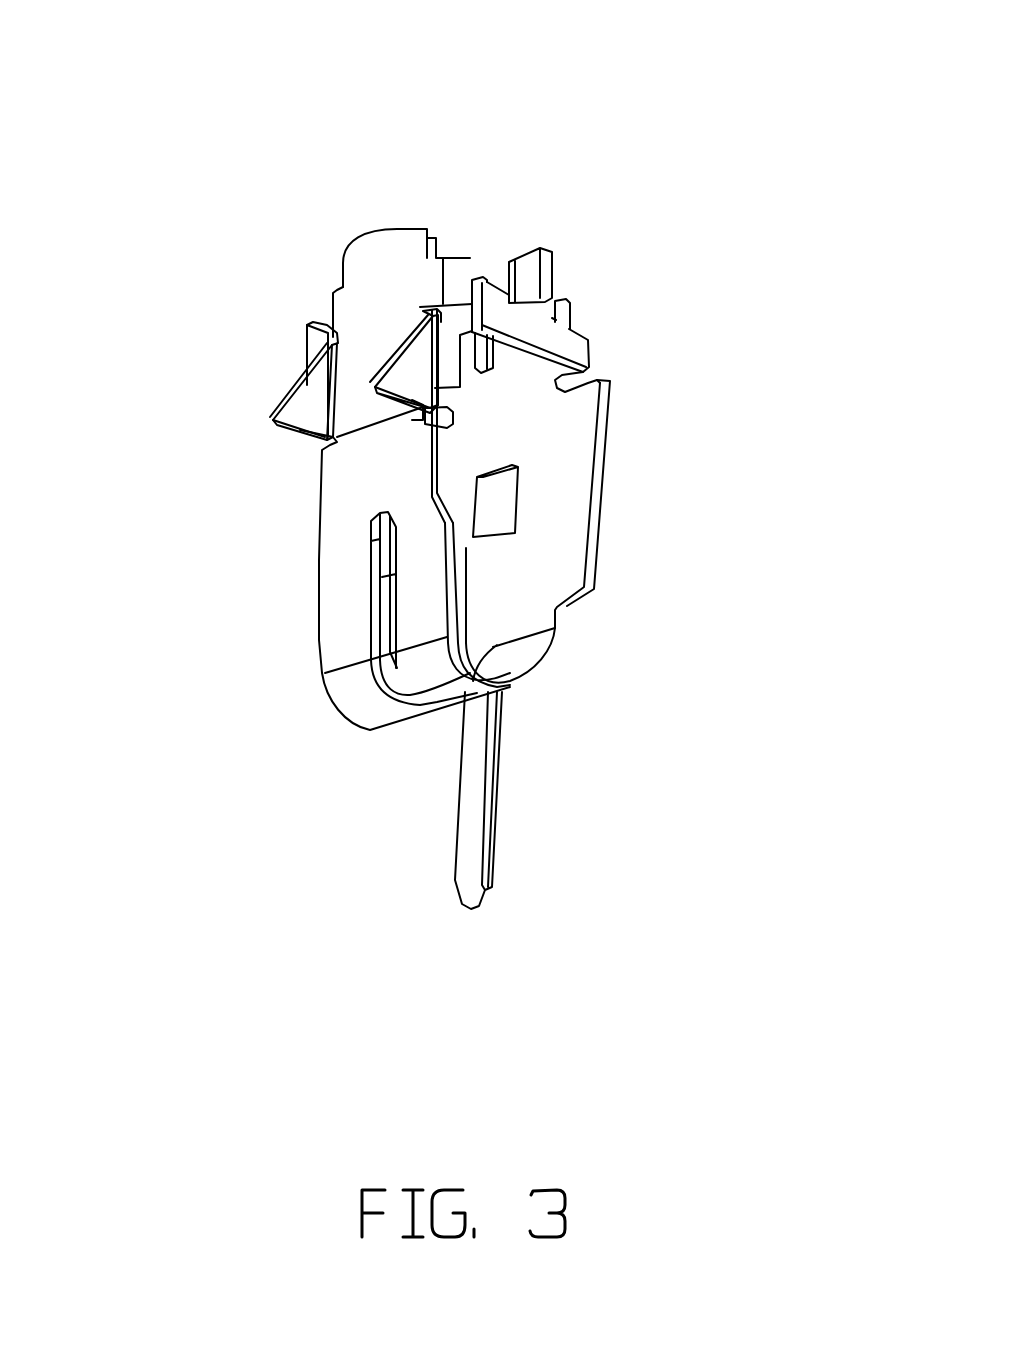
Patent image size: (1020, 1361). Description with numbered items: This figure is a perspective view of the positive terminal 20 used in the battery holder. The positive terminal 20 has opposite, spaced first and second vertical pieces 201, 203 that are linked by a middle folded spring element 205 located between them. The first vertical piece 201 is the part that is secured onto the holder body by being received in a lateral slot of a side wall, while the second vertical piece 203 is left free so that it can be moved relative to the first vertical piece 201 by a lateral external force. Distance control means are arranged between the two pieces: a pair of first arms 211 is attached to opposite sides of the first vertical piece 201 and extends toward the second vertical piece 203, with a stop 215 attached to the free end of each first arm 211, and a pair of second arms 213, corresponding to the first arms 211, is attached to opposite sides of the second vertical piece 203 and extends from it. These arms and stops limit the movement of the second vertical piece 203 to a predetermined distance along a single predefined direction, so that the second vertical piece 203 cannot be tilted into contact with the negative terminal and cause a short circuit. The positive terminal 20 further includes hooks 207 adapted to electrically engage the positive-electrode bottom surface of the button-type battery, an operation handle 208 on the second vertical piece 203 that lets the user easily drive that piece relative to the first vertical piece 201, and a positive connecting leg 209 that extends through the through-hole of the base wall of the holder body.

The positive terminal 20 is at (427, 454).
The first vertical piece 201 is at (590, 493).
The second vertical piece 203 is at (323, 508).
The middle folded spring element 205 is at (522, 627).
The hooks 207 is at (273, 372).
The operation handle 208 is at (406, 218).
The positive connecting leg 209 is at (559, 800).
The first arms 211 is at (645, 345).
The second arms 213 is at (490, 264).
The stop 215 is at (589, 310).